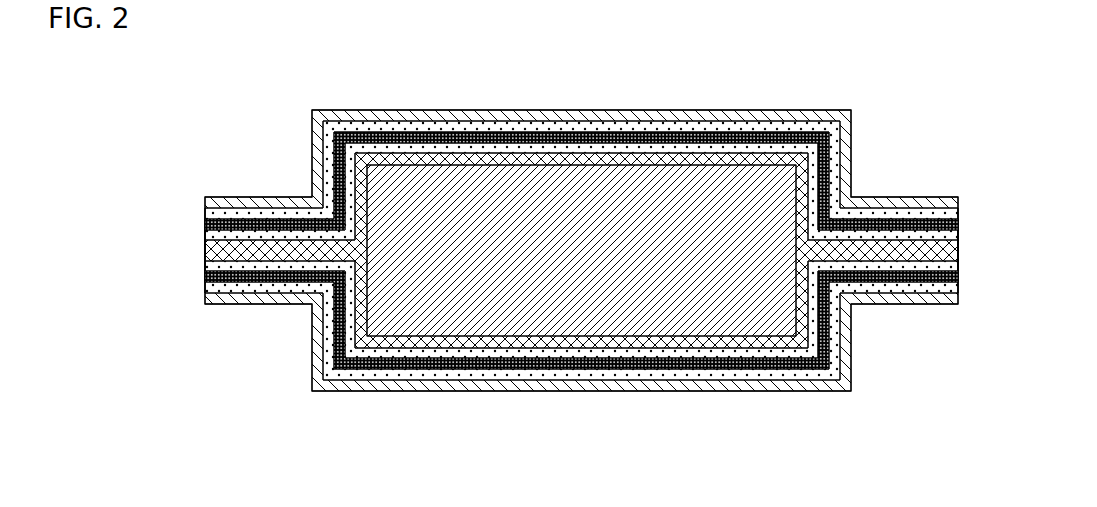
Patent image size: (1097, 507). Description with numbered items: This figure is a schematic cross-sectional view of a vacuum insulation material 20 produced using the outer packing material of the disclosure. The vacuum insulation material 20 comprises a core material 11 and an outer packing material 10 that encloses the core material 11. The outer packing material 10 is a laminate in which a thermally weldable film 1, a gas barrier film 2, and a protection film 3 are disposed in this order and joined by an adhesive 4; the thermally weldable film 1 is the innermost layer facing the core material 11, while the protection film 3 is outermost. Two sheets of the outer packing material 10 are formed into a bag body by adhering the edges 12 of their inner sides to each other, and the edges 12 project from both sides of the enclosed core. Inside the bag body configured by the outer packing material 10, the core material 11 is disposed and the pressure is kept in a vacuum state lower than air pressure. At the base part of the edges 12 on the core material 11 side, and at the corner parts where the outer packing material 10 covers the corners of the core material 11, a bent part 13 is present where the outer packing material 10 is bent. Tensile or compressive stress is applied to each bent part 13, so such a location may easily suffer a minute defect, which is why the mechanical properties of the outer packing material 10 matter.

The thermally weldable film 1 is at (634, 161).
The gas barrier film 2 is at (605, 139).
The protection film 3 is at (573, 118).
The adhesive 4 is at (591, 129).
The outer packing material 10 is at (609, 36).
The core material 11 is at (688, 320).
The edges 12 is at (205, 305).
The bent part 13 is at (313, 112).
The vacuum insulation material 20 is at (797, 38).